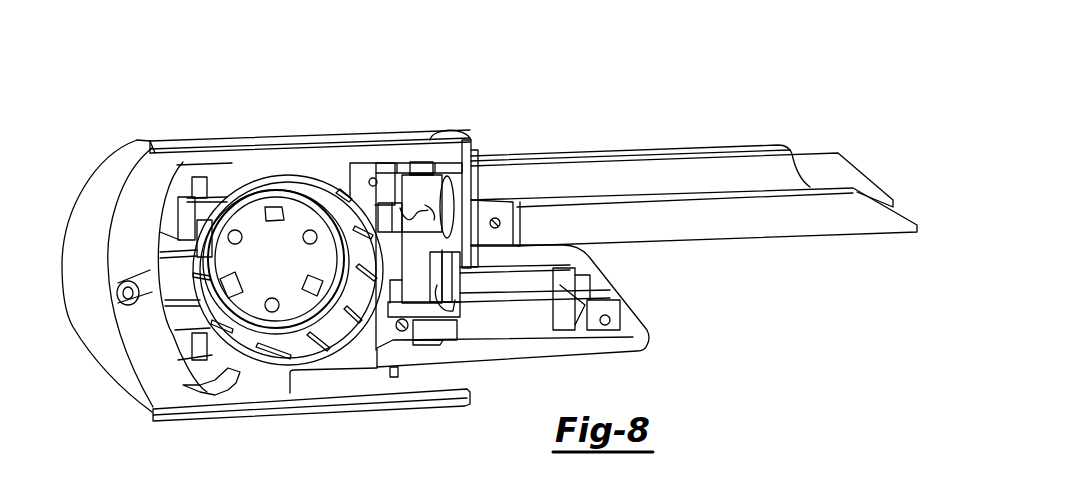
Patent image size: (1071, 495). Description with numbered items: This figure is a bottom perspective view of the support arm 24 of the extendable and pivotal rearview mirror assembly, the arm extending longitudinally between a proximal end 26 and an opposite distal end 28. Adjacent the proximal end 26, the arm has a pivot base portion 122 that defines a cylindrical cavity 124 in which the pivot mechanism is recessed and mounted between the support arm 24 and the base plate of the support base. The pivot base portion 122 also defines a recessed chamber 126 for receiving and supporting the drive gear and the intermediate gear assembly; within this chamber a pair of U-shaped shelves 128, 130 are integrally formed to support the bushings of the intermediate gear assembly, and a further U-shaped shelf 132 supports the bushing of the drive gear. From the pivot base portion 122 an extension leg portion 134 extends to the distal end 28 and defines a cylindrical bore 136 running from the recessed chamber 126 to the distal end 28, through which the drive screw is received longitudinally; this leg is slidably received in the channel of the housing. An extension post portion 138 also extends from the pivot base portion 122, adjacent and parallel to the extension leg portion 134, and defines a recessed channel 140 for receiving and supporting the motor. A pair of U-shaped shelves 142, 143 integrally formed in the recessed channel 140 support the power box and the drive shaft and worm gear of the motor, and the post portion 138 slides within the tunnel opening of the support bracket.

The support arm 24 is at (398, 130).
The proximal end 26 is at (63, 330).
The distal end 28 is at (918, 232).
The pivot base portion 122 is at (262, 165).
The cylindrical cavity 124 is at (284, 273).
The recessed chamber 126 is at (445, 233).
The U-shaped shelf 128 is at (422, 163).
The U-shaped shelf 130 is at (427, 328).
The U-shaped shelf 132 is at (382, 187).
The extension leg portion 134 is at (673, 150).
The cylindrical bore 136 is at (448, 196).
The extension post portion 138 is at (648, 340).
The recessed channel 140 is at (530, 296).
The U-shaped shelf 142 is at (438, 287).
The U-shaped shelf 143 is at (573, 283).